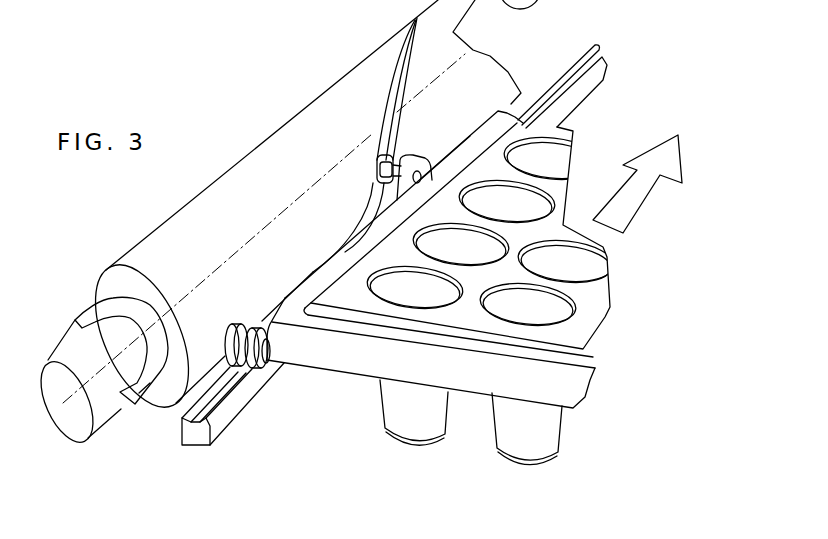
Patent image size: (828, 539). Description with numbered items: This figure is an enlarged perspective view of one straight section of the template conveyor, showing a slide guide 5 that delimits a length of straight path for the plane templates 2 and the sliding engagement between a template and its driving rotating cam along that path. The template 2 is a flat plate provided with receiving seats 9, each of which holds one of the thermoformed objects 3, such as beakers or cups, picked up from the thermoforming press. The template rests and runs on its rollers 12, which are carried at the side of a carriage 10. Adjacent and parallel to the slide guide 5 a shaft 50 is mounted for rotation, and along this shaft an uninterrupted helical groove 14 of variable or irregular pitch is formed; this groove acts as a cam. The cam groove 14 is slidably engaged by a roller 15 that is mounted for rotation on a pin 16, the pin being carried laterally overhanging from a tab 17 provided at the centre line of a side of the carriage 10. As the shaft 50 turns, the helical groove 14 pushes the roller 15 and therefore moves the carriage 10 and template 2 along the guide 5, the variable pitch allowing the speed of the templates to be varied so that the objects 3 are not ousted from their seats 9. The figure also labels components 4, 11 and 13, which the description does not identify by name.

The plane template 2 is at (367, 393).
The thermoformed objects 3 is at (505, 432).
The drive wheel 4 is at (559, 6).
The slide guide 5 is at (583, 91).
The receiving seat 9 is at (563, 232).
The carriage 10 is at (347, 357).
The tray plate 11 is at (483, 242).
The rollers 12 is at (240, 362).
The bearing ring 13 is at (263, 352).
The helical groove (cam) 14 is at (384, 108).
The roller 15 is at (376, 157).
The pin 16 is at (397, 150).
The tab 17 is at (433, 154).
The shaft 50 is at (247, 190).